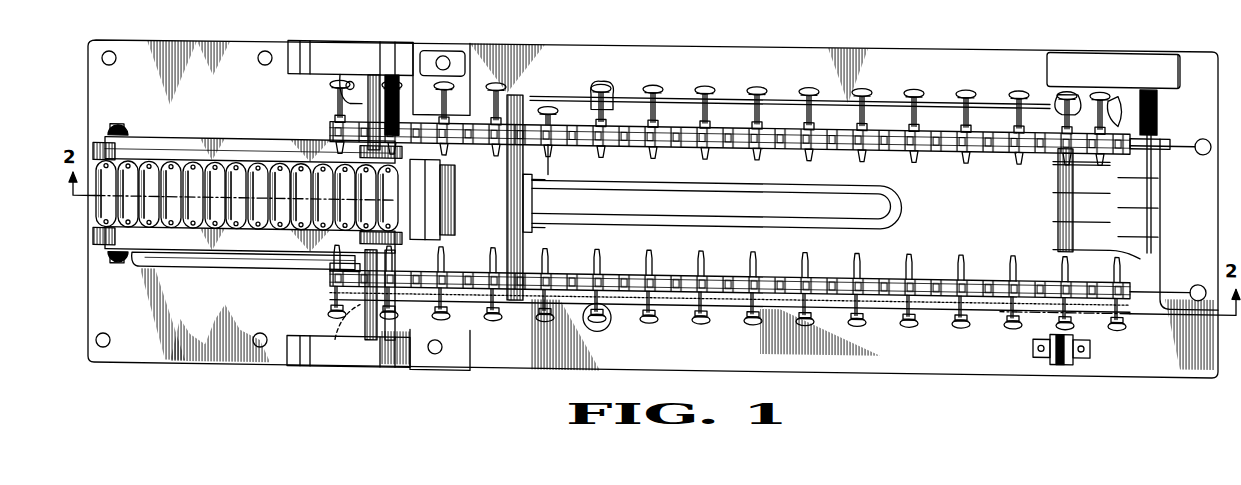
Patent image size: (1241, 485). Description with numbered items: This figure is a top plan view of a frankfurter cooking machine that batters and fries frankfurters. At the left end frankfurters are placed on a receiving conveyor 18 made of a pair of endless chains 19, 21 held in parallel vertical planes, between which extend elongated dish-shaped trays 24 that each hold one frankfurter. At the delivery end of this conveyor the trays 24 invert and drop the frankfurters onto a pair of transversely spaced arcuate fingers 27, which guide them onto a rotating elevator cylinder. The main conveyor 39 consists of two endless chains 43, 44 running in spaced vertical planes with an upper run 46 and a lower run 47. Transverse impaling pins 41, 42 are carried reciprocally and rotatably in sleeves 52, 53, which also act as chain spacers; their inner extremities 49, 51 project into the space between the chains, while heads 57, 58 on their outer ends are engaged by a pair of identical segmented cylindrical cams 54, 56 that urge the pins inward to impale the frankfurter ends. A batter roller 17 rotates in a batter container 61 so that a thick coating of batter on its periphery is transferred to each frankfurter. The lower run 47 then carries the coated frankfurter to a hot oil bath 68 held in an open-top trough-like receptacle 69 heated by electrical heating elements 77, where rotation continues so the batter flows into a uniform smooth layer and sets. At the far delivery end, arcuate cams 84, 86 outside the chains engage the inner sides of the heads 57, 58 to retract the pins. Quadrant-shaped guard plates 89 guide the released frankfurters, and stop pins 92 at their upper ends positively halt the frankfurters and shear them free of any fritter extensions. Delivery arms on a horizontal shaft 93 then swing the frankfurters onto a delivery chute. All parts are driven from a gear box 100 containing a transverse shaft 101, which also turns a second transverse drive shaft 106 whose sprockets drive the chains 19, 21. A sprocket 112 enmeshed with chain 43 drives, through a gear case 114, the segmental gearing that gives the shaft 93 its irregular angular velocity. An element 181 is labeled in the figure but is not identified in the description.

The batter roller 17 is at (452, 173).
The conveyor 18 is at (218, 153).
The endless chain 19 is at (105, 141).
The endless chain 21 is at (105, 238).
The dish-shaped tray 24 is at (250, 235).
The arcuate finger 27 is at (432, 203).
The conveyor 39 is at (531, 110).
The pin 41 is at (660, 90).
The pin 42 is at (602, 252).
The endless chain 43 is at (328, 120).
The endless chain 44 is at (328, 268).
The upper run 46 is at (625, 116).
The lower run 47 is at (573, 85).
The inner extremity 49 is at (553, 155).
The inner extremity 51 is at (447, 250).
The sleeve 52 is at (713, 116).
The sleeve 53 is at (712, 267).
The cam 54 is at (344, 78).
The cam 56 is at (345, 325).
The head 57 is at (656, 77).
The head 58 is at (648, 316).
The batter container 61 is at (185, 260).
The hot oil bath 68 is at (737, 206).
The receptacle 69 is at (1165, 235).
The electrical heating element 77 is at (903, 180).
The cam 84 is at (1112, 82).
The cam 86 is at (1095, 307).
The guard plate 89 is at (1090, 177).
The stop pin 92 is at (1088, 148).
The horizontal shaft 93 is at (1160, 153).
The gear box 100 is at (390, 48).
The transverse shaft 101 is at (350, 94).
The transverse drive shaft 106 is at (400, 92).
The sprocket 112 is at (1165, 122).
The gear case 114 is at (1115, 38).
The rod guide bars 181 is at (1160, 189).